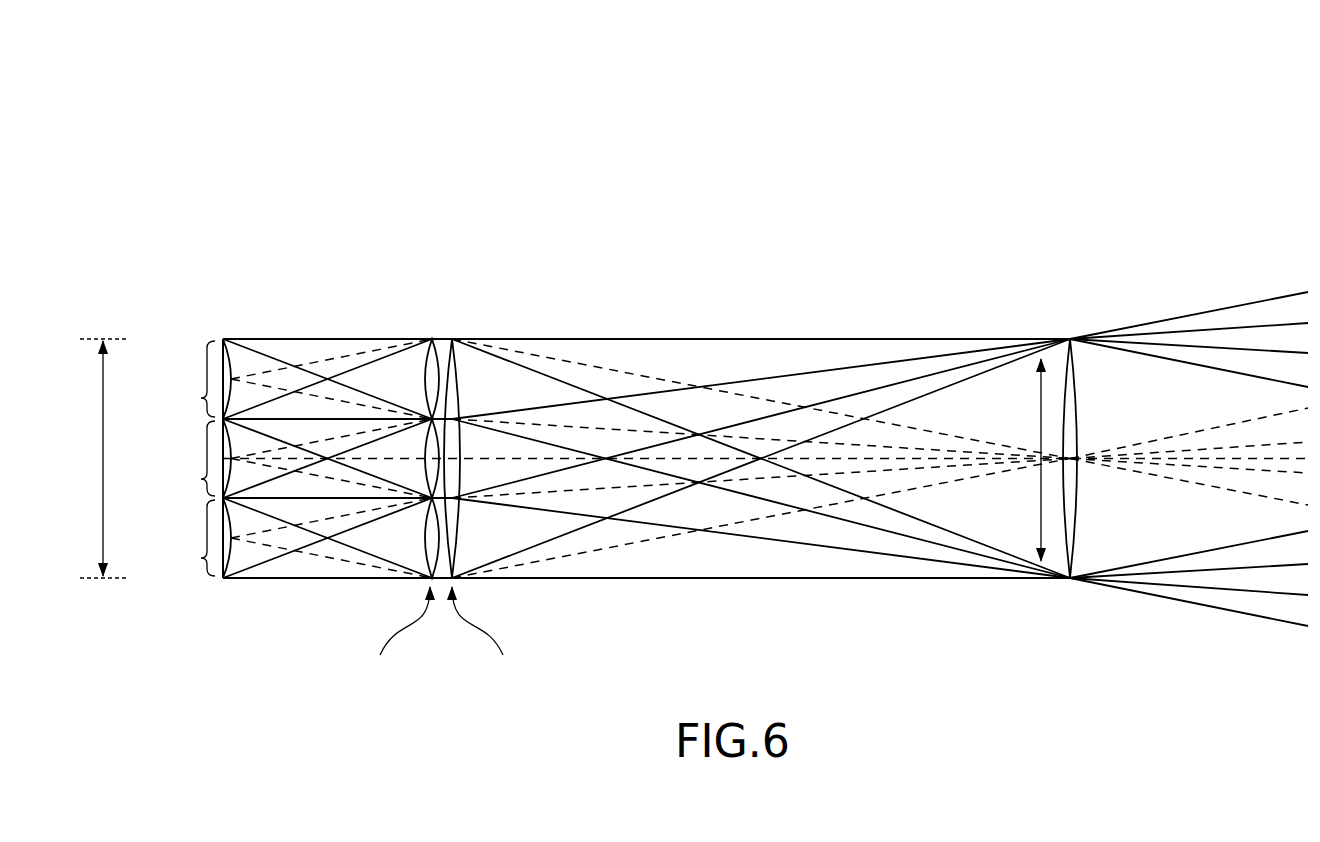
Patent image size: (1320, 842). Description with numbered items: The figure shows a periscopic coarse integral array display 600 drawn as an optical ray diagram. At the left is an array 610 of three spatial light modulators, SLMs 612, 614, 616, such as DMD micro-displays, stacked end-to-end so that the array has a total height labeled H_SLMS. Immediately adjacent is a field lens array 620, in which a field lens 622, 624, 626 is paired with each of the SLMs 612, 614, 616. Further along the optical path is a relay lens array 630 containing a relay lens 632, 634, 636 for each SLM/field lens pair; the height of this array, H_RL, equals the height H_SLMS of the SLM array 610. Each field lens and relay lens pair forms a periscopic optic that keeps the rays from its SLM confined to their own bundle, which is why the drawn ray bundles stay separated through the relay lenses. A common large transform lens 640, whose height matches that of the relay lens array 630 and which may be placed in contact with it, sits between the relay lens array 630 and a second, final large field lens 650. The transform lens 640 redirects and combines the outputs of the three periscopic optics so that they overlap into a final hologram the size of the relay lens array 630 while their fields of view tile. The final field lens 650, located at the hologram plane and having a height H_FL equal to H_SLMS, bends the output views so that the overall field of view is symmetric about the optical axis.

The periscopic coarse integral array display 600 is at (192, 132).
The SLM array 610 is at (198, 341).
The SLM 612 is at (202, 398).
The SLM 614 is at (202, 479).
The SLM 616 is at (202, 558).
The field lens array 620 is at (226, 328).
The field lens 622 is at (233, 368).
The field lens 624 is at (233, 446).
The field lens 626 is at (233, 522).
The relay lens array 630 is at (433, 333).
The relay lens 632 is at (426, 357).
The relay lens 634 is at (423, 437).
The relay lens 636 is at (426, 514).
The common large transform lens 640 is at (462, 380).
The field lens 650 is at (1070, 337).